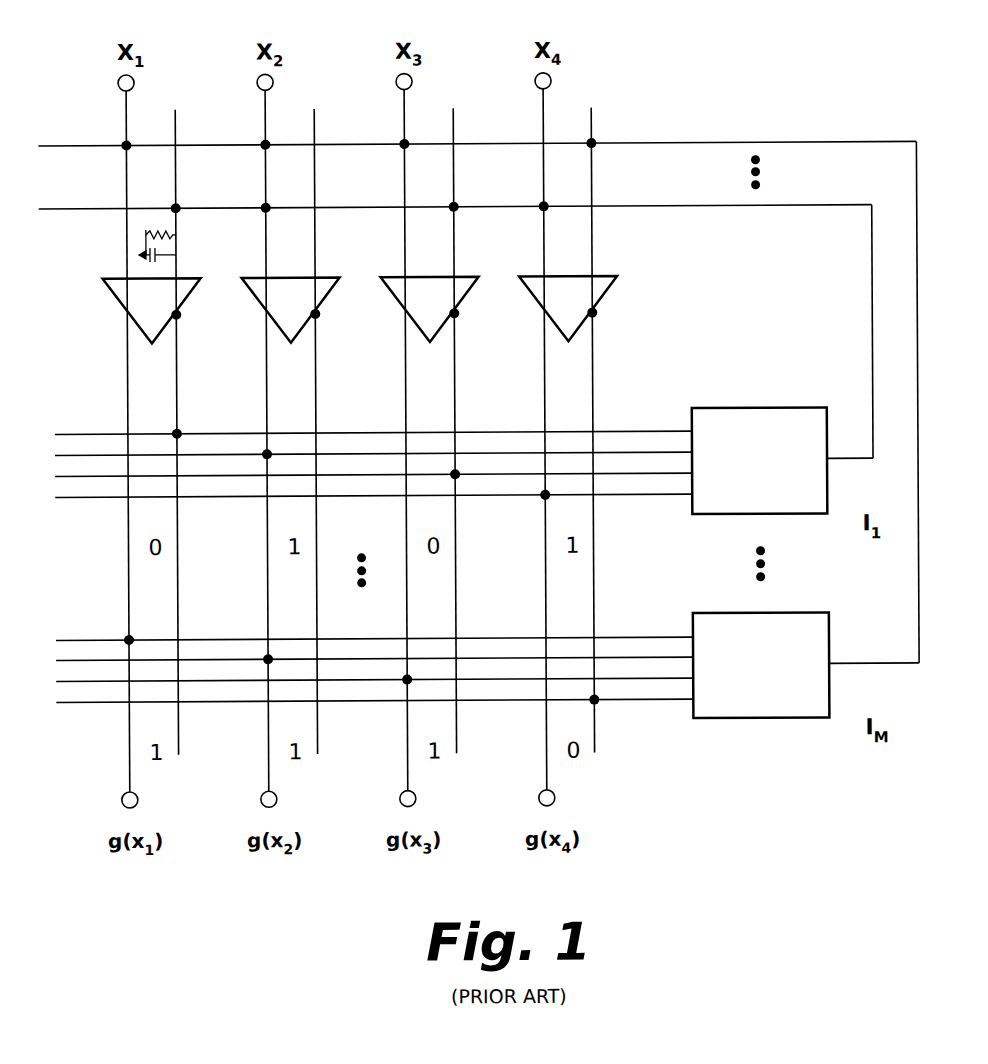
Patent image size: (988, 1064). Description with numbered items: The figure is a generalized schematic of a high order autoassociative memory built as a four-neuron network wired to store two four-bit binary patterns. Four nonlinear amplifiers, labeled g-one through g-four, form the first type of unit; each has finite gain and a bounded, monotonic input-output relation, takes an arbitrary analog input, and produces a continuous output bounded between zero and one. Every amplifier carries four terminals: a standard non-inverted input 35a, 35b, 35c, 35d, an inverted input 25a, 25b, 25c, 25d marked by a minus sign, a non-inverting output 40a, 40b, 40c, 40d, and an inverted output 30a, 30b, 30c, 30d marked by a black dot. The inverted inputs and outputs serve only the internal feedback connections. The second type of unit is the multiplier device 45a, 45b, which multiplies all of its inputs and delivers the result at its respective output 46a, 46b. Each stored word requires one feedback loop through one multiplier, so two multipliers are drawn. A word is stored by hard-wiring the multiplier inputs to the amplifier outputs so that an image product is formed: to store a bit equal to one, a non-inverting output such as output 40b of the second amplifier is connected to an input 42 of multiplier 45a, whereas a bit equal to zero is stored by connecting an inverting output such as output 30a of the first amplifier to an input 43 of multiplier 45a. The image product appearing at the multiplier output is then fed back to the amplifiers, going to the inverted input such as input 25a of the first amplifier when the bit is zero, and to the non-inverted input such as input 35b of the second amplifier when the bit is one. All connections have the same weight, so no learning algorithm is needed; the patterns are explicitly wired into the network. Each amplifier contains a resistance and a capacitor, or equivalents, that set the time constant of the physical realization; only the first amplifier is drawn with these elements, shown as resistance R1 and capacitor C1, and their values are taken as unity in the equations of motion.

The inverted input 25a is at (181, 277).
The inverted input 25b is at (320, 277).
The inverted input 25c is at (459, 277).
The inverted input 25d is at (597, 277).
The inverted output 30a is at (178, 319).
The inverted output 30b is at (317, 319).
The inverted output 30c is at (456, 319).
The inverted output 30d is at (594, 319).
The non-inverted input 35a is at (120, 277).
The non-inverted input 35b is at (259, 277).
The non-inverted input 35c is at (398, 277).
The non-inverted input 35d is at (537, 277).
The non-inverting output 40a is at (128, 313).
The non-inverting output 40b is at (267, 313).
The non-inverting output 40c is at (406, 313).
The non-inverting output 40d is at (545, 313).
The input of multiplier 42 is at (692, 451).
The input of multiplier 43 is at (670, 430).
The multiplier device 45a is at (760, 409).
The multiplier device 45b is at (760, 719).
The multiplier output 46a is at (828, 464).
The multiplier output 46b is at (828, 669).
The resistance R1 is at (155, 233).
The capacitor element C1 is at (157, 264).